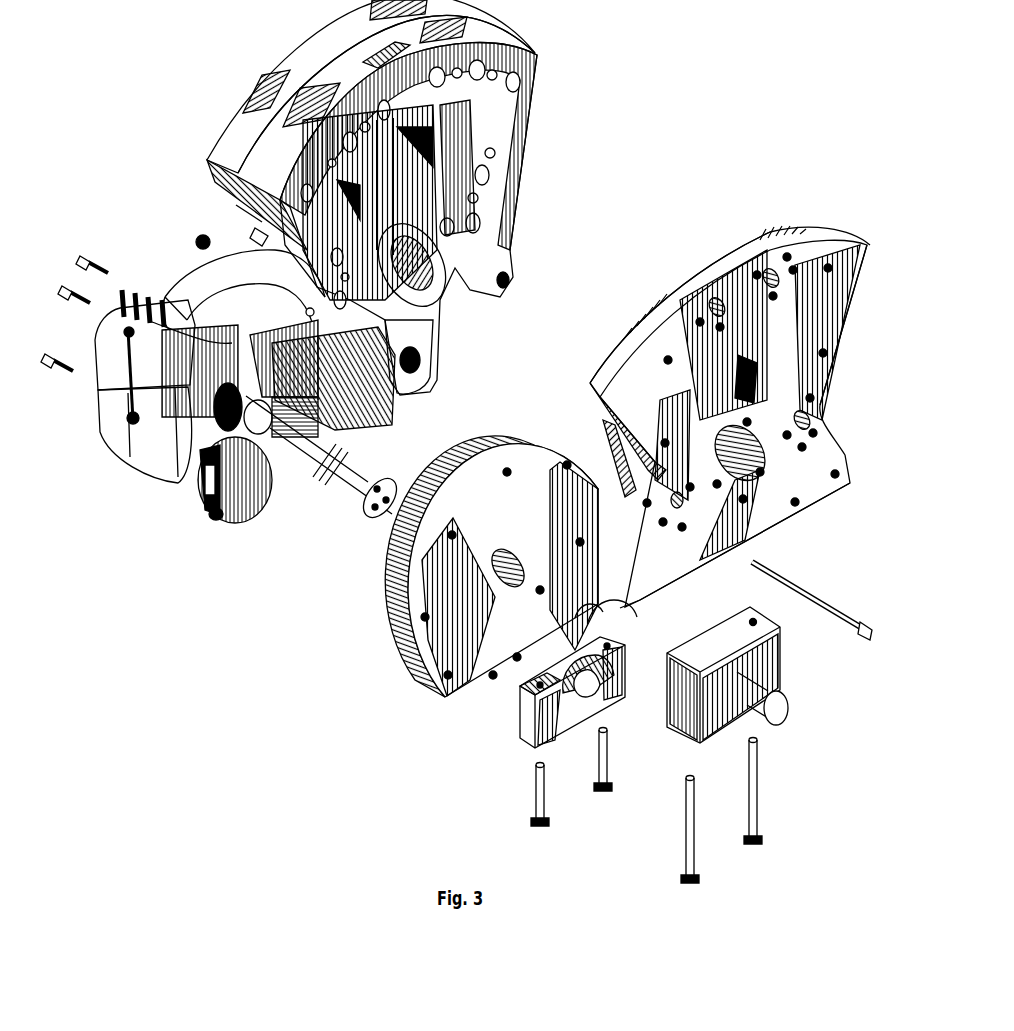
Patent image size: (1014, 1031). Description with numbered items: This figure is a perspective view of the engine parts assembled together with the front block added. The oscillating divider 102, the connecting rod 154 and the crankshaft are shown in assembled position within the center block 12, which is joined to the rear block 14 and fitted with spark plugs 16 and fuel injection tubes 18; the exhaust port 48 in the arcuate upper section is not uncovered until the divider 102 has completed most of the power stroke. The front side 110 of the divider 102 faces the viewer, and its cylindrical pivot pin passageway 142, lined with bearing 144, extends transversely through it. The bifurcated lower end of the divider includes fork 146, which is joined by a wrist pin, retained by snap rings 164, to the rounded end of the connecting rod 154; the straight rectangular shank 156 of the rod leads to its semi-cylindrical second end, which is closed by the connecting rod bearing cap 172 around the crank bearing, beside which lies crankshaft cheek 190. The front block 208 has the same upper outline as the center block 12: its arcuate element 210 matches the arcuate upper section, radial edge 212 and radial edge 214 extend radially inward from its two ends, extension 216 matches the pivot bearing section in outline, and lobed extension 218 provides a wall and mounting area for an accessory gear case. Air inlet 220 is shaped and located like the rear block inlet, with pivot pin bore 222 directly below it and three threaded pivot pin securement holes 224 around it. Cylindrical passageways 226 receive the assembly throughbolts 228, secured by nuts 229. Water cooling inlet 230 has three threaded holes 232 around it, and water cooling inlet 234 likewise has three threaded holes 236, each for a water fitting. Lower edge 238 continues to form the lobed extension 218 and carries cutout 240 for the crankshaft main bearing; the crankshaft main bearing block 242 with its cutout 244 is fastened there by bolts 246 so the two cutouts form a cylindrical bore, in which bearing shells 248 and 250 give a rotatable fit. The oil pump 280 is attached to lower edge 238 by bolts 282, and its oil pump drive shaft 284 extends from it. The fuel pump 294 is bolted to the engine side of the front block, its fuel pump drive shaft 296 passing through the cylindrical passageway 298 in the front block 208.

The center block 12 is at (482, 34).
The rear block 14 is at (224, 141).
The spark plugs 16 is at (257, 233).
The fuel injection tubes 18 is at (243, 213).
The exhaust port 48 is at (375, 60).
The oscillating divider 102 is at (459, 167).
The front side 110 is at (430, 180).
The cylindrical pivot pin passageway 142 is at (388, 297).
The bearing 144 is at (433, 293).
The fork 146 is at (402, 388).
The connecting rod 154 is at (333, 427).
The straight rectangular shank 156 is at (344, 416).
The snap rings 164 is at (413, 370).
The connecting rod bearing cap 172 is at (233, 520).
The crankshaft cheek 190 is at (260, 500).
The front block 208 is at (698, 246).
The arcuate element 210 is at (667, 292).
The radial edge 212 is at (612, 434).
The radial edge 214 is at (834, 374).
The extension 216 is at (812, 504).
The lobed extension 218 is at (531, 533).
The air inlet 220 is at (756, 371).
The pivot pin bore 222 is at (726, 444).
The threaded pivot pin securement holes 224 is at (750, 422).
The cylindrical passageways 226 is at (795, 273).
The assembly throughbolts 228 is at (803, 580).
The nuts 229 is at (200, 238).
The water cooling inlet 230 is at (680, 500).
The threaded holes 232 is at (662, 522).
The water cooling inlet 234 is at (808, 418).
The threaded holes 236 is at (817, 434).
The lower edge 238 is at (663, 590).
The cutout 240 is at (577, 627).
The crankshaft main bearing block 242 is at (522, 727).
The cutout 244 is at (590, 697).
The bolts 246 is at (607, 790).
The bearing shell 248 is at (614, 614).
The bearing shell 250 is at (578, 674).
The oil pump 280 is at (778, 637).
The bolts 282 is at (755, 845).
The oil pump drive shaft 284 is at (789, 714).
The fuel pump 294 is at (134, 373).
The fuel pump drive shaft 296 is at (207, 396).
The cylindrical passageway 298 is at (493, 593).